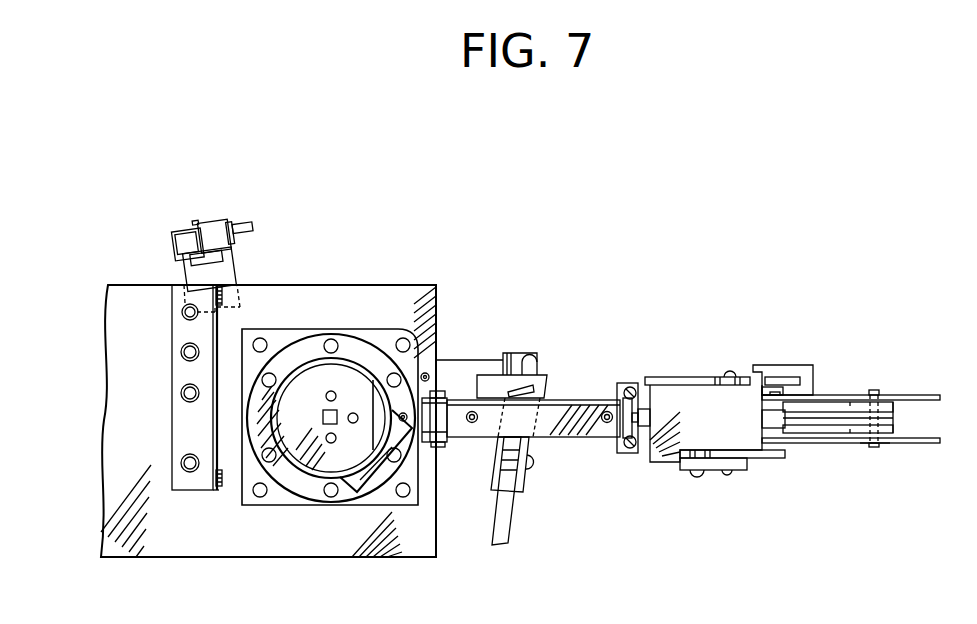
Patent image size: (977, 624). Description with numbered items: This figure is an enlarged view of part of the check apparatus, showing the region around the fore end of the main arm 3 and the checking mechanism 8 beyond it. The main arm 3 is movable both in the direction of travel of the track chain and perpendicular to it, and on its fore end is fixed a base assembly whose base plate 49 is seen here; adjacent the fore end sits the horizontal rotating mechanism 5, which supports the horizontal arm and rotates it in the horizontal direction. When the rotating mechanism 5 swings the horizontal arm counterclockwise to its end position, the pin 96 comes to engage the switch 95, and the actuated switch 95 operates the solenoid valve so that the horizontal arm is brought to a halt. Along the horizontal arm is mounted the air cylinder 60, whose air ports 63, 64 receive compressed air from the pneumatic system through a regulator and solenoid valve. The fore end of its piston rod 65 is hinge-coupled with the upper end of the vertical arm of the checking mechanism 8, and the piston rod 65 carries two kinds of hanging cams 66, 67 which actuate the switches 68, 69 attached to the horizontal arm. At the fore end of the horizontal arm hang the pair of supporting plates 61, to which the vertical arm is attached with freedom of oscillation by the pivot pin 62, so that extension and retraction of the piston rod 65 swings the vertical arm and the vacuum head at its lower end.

The main arm 3 is at (398, 538).
The horizontal rotating mechanism 5 is at (294, 320).
The base plate 49 is at (290, 482).
The switch 95 is at (222, 232).
The pin 96 is at (521, 365).
The air cylinder 60 is at (590, 410).
The air port 63 is at (470, 426).
The air port 64 is at (606, 426).
The piston rod 65 is at (640, 432).
The hanging cam 66 is at (670, 378).
The hanging cam 67 is at (773, 460).
The switch 68 is at (738, 468).
The switch 69 is at (790, 368).
The hanging supporting plates 61 is at (930, 397).
The pivot pin 62 is at (875, 395).
The checking mechanism 8 is at (866, 458).